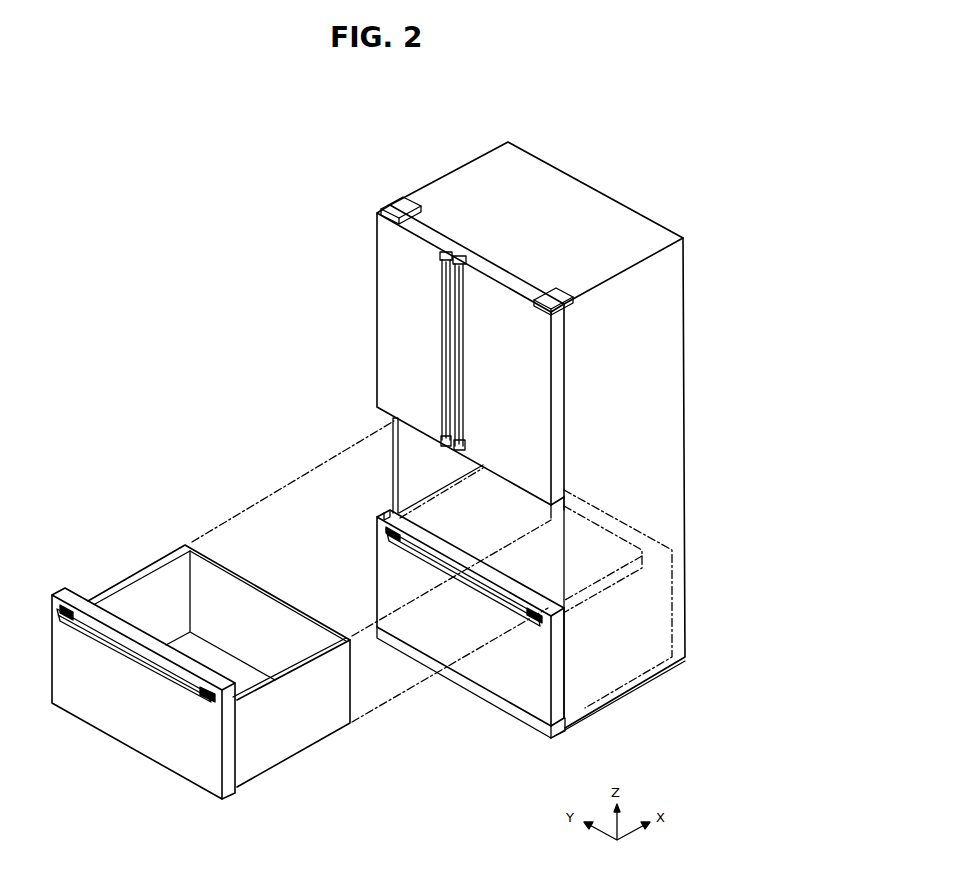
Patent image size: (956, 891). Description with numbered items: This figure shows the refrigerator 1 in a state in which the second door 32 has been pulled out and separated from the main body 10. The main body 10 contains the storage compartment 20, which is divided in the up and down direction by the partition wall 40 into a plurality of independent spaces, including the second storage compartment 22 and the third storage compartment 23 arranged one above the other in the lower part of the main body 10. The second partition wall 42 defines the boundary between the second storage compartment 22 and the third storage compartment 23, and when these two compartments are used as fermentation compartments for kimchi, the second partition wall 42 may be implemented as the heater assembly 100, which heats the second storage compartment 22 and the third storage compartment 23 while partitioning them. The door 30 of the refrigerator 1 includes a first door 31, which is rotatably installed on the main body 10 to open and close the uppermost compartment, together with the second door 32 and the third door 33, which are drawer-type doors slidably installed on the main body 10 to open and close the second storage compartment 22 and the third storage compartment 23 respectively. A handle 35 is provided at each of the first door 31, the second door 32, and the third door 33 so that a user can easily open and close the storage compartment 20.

The refrigerator 1 is at (394, 137).
The main body 10 is at (581, 177).
The storage compartment 20 is at (512, 440).
The second storage compartment 22 is at (427, 476).
The third storage compartment 23 is at (587, 657).
The door 30 is at (342, 500).
The first door 31 is at (400, 281).
The second door 32 is at (146, 722).
The third door 33 is at (503, 665).
The handle 35 is at (441, 383).
The partition wall 40 is at (441, 508).
The second partition wall 42 is at (396, 513).
The heater assembly 100 is at (612, 583).